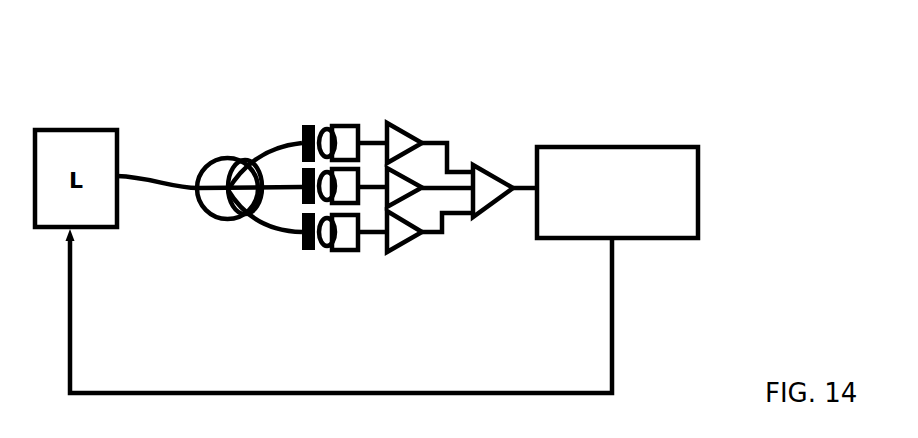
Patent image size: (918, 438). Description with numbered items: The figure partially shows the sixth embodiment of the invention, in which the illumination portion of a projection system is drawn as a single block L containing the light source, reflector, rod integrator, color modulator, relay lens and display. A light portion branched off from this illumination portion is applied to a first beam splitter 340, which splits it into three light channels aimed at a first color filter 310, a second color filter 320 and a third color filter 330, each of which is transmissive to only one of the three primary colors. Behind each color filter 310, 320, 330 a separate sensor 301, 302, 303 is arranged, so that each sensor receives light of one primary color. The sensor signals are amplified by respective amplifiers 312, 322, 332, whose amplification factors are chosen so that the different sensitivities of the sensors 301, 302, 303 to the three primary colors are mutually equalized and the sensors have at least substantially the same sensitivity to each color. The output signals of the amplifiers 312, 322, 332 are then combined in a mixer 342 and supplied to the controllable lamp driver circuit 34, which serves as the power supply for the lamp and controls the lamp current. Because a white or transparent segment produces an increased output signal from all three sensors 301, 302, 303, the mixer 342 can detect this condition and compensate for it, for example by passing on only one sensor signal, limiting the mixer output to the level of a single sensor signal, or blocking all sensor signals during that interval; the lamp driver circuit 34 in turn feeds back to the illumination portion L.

The lamp driver circuit 34 is at (617, 192).
The sensor 301 is at (397, 354).
The sensor 302 is at (353, 186).
The sensor 303 is at (353, 232).
The first color filter 310 is at (276, 126).
The second color filter 320 is at (308, 186).
The third color filter 330 is at (308, 231).
The amplifier 312 is at (487, 62).
The amplifier 322 is at (430, 187).
The amplifier 332 is at (430, 231).
The first beam splitter 340 is at (192, 232).
The mixer 342 is at (496, 230).